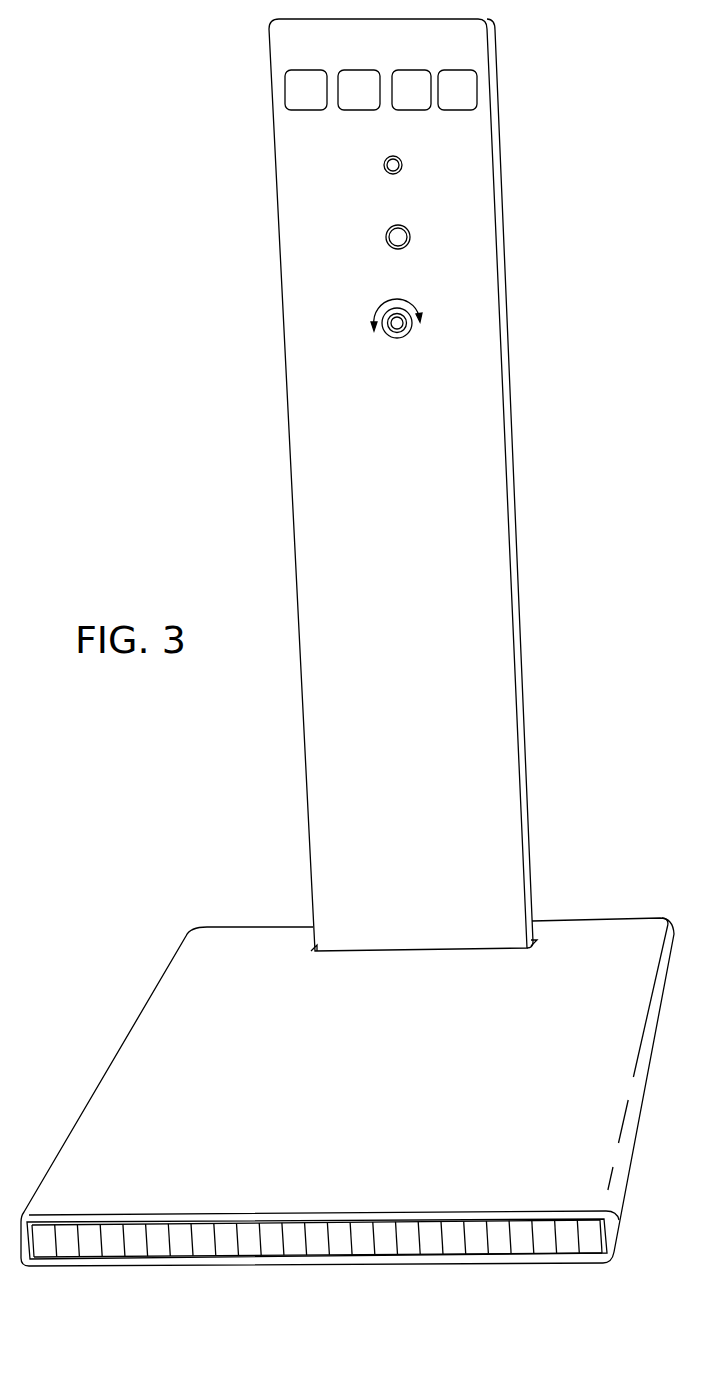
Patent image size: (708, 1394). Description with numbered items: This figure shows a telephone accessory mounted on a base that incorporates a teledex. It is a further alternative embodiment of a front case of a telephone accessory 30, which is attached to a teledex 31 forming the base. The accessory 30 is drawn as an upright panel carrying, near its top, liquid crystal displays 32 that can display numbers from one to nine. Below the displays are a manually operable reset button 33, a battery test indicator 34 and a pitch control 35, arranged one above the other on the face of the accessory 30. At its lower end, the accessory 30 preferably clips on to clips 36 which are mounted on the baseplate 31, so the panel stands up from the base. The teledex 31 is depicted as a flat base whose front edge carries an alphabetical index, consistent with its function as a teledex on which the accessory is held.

The telephone accessory 30 is at (290, 456).
The teledex 31 is at (152, 1000).
The liquid crystal displays 32 is at (460, 82).
The manually operable reset button 33 is at (404, 167).
The battery test indicator 34 is at (412, 237).
The pitch control 35 is at (411, 333).
The clips 36 is at (312, 950).